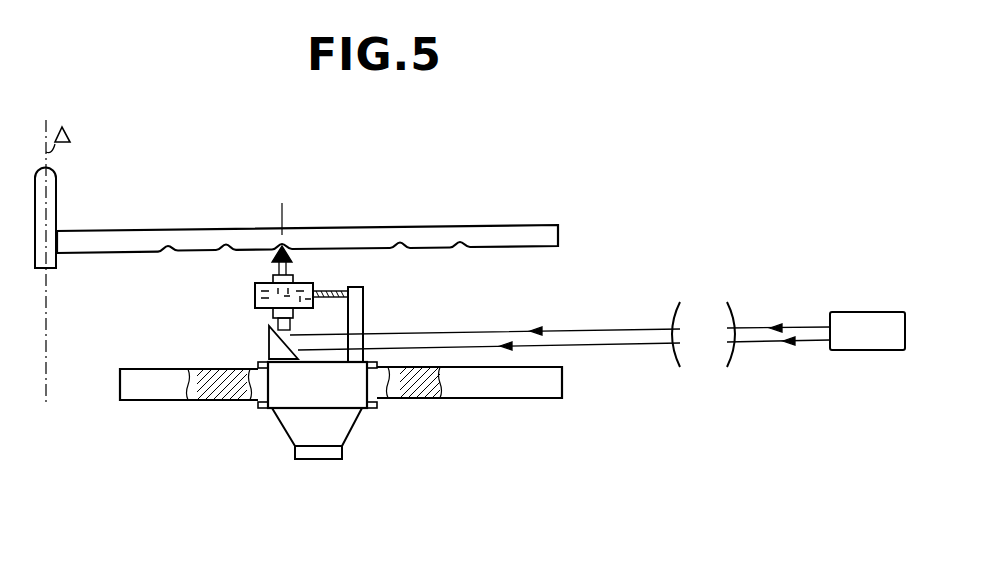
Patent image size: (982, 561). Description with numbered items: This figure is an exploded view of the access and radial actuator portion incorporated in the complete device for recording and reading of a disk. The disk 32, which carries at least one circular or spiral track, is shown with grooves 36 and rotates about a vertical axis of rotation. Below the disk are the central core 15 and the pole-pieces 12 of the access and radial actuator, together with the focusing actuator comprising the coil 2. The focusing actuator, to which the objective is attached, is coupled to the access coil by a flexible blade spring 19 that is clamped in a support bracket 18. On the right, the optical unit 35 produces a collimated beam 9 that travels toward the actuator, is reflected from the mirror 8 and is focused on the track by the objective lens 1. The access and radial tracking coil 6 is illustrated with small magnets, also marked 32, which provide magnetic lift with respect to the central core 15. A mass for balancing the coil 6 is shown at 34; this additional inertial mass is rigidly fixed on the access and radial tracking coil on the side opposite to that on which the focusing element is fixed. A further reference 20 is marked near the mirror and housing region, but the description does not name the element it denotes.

The objective lens 1 is at (292, 283).
The coil 2 is at (255, 285).
The coil 6 is at (288, 432).
The mirror 8 is at (268, 342).
The collimated beam 9 is at (600, 328).
The pole-pieces 12 is at (172, 390).
The central core 15 is at (425, 400).
The support bracket 18 is at (365, 291).
The flexible blade spring 19 is at (326, 291).
The housing 20 is at (263, 353).
The disk 32 is at (503, 232).
The balancing mass 34 is at (343, 436).
The optical unit 35 is at (862, 318).
The grooves 36 is at (400, 250).